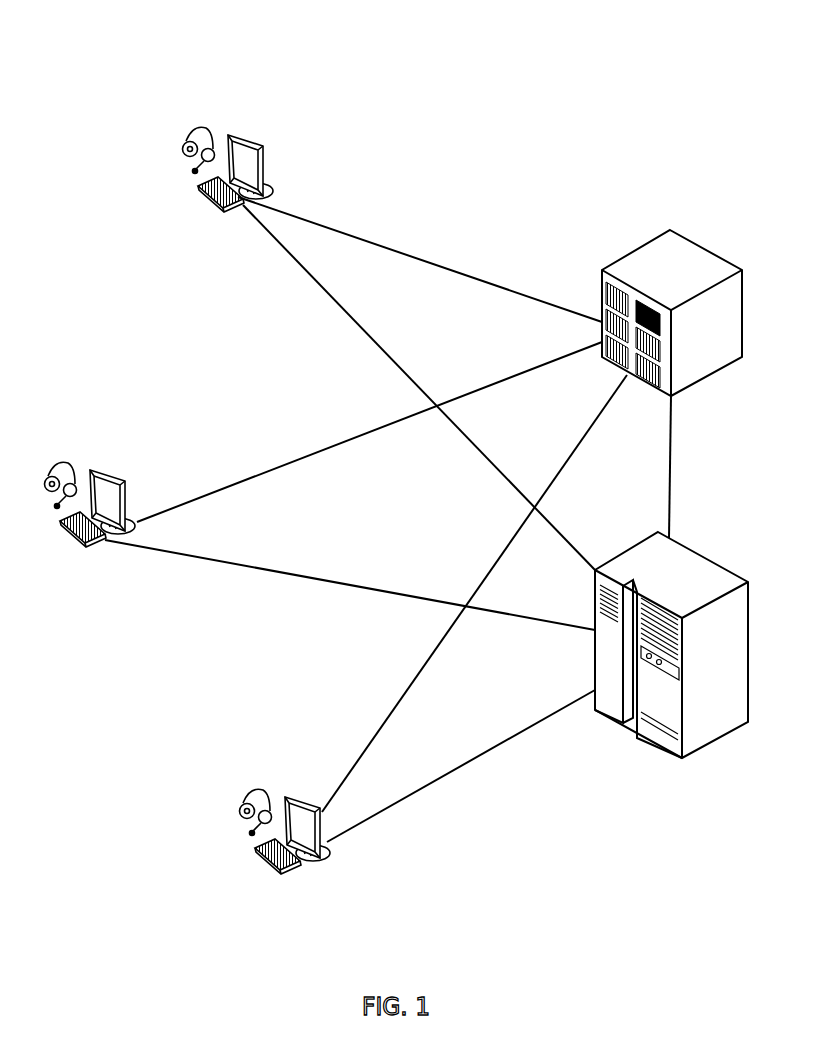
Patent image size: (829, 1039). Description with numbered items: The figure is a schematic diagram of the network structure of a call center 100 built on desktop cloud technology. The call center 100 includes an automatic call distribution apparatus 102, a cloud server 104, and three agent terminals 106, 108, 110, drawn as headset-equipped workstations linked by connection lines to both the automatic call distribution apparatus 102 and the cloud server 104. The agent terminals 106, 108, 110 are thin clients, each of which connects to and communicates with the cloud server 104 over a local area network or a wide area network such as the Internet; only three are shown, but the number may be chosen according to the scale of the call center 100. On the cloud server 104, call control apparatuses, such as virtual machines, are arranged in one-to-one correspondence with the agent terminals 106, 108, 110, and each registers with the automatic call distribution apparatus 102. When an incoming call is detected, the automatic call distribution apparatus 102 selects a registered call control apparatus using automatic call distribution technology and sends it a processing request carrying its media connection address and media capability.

The call center 100 is at (388, 441).
The automatic call distribution apparatus 102 is at (672, 256).
The cloud server 104 is at (671, 683).
The agent terminal 106 is at (207, 209).
The agent terminal 108 is at (90, 542).
The agent terminal 110 is at (285, 868).